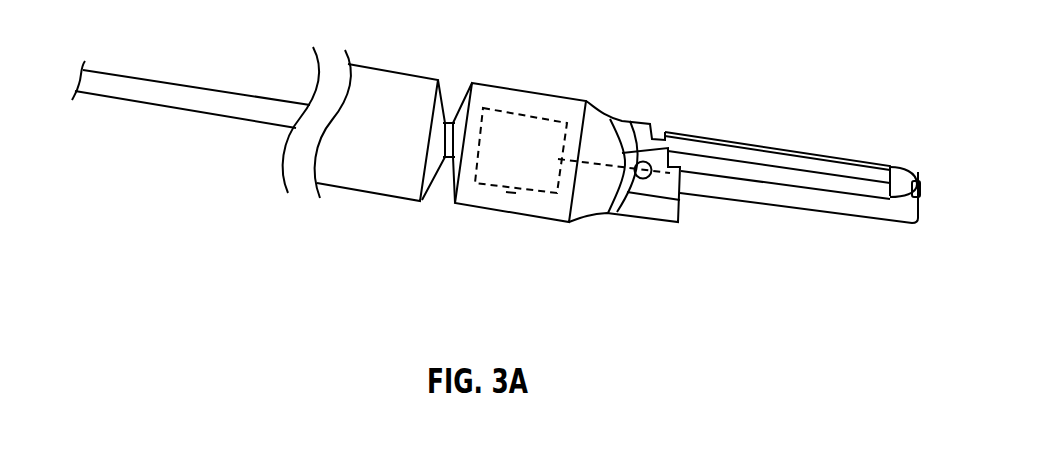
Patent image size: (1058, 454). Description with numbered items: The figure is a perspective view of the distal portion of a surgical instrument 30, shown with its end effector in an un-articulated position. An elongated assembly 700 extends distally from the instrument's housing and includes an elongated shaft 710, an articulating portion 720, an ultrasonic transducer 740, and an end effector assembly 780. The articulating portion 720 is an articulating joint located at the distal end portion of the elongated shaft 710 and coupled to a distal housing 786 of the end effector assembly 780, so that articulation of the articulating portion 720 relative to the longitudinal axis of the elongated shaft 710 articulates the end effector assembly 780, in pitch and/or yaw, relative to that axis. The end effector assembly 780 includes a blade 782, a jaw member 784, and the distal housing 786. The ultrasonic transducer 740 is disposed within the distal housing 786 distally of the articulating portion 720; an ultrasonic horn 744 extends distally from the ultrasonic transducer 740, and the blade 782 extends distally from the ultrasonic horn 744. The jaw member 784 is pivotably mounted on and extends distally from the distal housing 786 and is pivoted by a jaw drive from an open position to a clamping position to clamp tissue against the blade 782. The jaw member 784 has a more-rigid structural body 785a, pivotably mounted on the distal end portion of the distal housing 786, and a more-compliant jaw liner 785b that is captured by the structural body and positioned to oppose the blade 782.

The surgical instrument 30 is at (222, 58).
The elongated assembly 700 is at (229, 239).
The elongated shaft 710 is at (150, 105).
The articulating portion 720 is at (454, 92).
The ultrasonic transducer 740 is at (511, 194).
The ultrasonic horn 744 is at (612, 165).
The end effector assembly 780 is at (856, 241).
The blade 782 is at (755, 203).
The jaw member 784 is at (747, 155).
The more-rigid structural body 785a is at (837, 161).
The more-compliant jaw liner 785b is at (915, 181).
The distal housing 786 is at (541, 93).